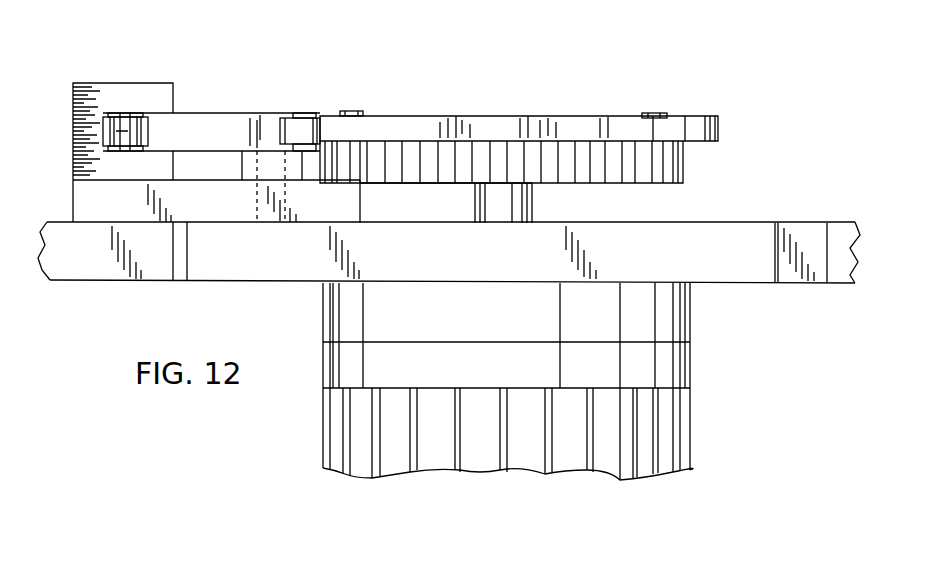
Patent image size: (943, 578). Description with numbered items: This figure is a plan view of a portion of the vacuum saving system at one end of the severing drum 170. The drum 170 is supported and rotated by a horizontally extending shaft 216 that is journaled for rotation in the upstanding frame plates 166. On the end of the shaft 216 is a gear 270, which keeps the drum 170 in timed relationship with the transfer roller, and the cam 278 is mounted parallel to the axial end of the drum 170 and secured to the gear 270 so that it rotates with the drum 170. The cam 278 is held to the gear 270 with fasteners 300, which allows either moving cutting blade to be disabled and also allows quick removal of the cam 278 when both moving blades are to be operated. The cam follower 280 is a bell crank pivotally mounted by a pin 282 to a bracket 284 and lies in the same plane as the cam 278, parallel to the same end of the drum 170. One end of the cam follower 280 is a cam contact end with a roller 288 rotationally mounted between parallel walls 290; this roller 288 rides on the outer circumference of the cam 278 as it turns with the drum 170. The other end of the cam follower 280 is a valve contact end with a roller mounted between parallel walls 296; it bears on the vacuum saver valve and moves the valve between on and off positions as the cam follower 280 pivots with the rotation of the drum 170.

The upstanding frame plate 166 is at (735, 235).
The severing means drum 170 is at (673, 417).
The shaft 216 is at (527, 203).
The gear 270 is at (684, 167).
The cam 278 is at (417, 125).
The cam follower 280 is at (241, 118).
The pin 282 is at (246, 165).
The bracket 284 is at (96, 208).
The roller 288 is at (302, 128).
The parallel walls 290 is at (290, 117).
The parallel walls 296 is at (146, 128).
The fasteners 300 is at (653, 113).